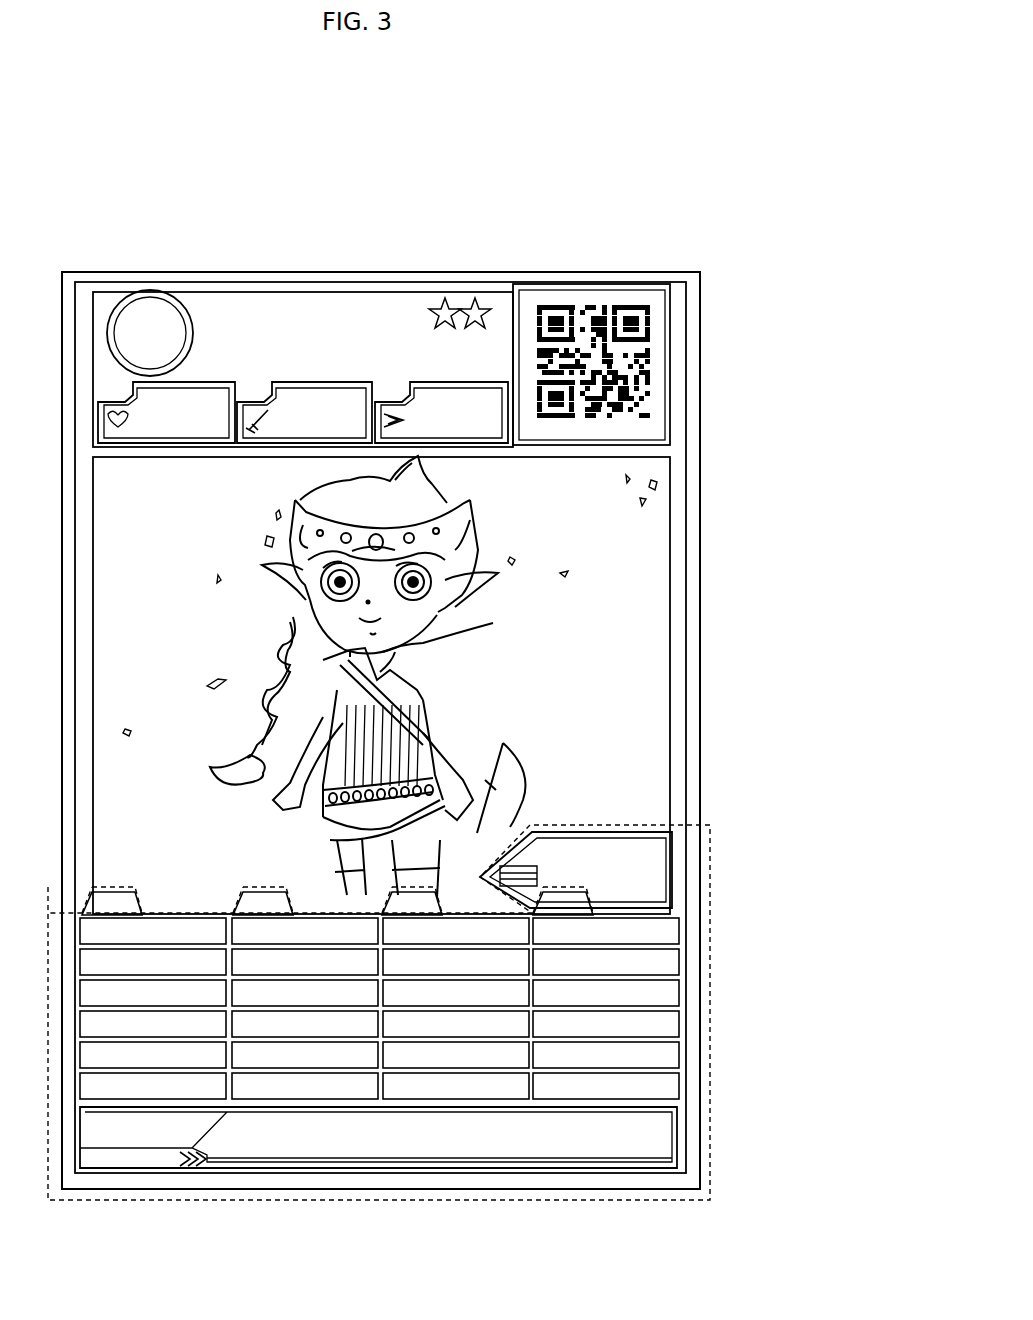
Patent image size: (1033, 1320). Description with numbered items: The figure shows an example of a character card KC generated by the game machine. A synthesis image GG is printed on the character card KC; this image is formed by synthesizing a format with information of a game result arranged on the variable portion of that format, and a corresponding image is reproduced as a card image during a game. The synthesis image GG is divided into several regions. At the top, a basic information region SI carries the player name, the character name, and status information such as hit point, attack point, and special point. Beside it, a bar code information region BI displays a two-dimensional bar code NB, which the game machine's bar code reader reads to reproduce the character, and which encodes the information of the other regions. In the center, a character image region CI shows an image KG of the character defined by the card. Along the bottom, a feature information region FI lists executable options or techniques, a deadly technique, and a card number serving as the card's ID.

The character card KC is at (368, 175).
The basic information region SI is at (107, 283).
The bar code information region BI is at (528, 285).
The 2D bar code NB is at (634, 305).
The synthesis image GG is at (686, 381).
The character image region CI is at (672, 541).
The image of a character KG is at (493, 623).
The feature information region FI is at (725, 838).